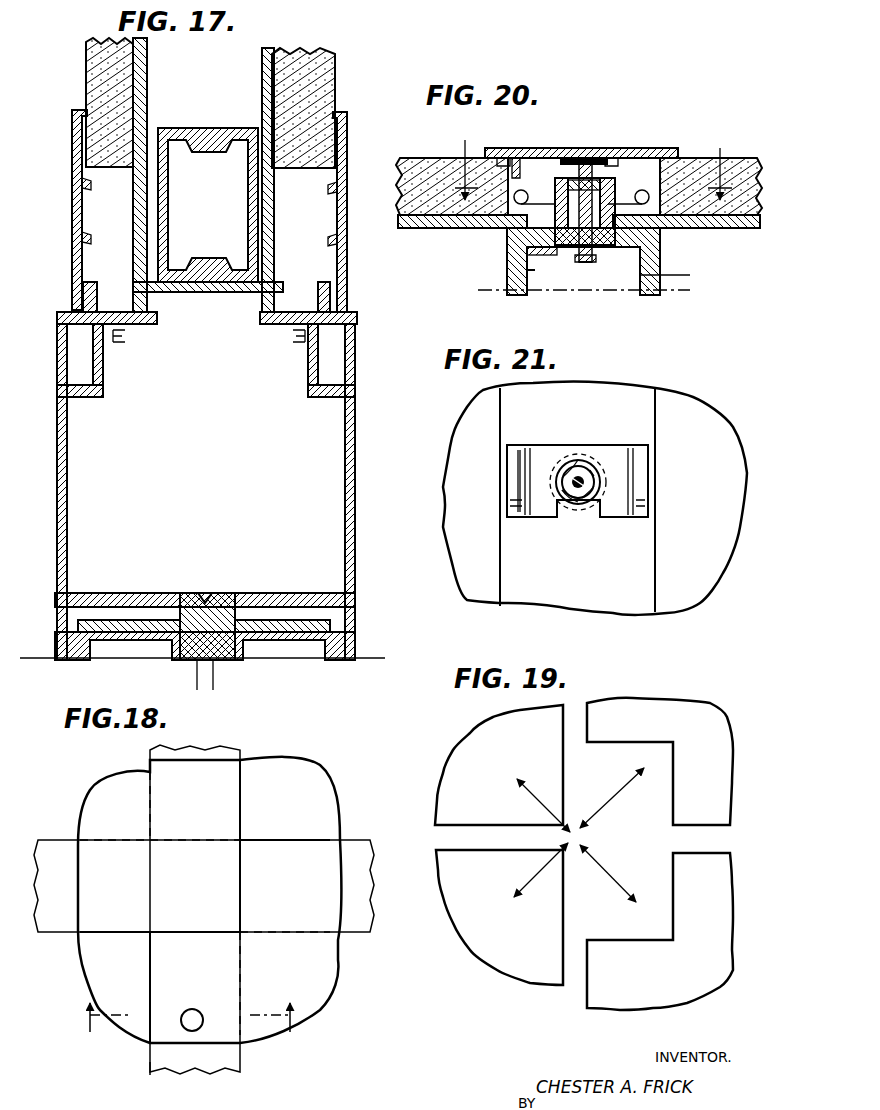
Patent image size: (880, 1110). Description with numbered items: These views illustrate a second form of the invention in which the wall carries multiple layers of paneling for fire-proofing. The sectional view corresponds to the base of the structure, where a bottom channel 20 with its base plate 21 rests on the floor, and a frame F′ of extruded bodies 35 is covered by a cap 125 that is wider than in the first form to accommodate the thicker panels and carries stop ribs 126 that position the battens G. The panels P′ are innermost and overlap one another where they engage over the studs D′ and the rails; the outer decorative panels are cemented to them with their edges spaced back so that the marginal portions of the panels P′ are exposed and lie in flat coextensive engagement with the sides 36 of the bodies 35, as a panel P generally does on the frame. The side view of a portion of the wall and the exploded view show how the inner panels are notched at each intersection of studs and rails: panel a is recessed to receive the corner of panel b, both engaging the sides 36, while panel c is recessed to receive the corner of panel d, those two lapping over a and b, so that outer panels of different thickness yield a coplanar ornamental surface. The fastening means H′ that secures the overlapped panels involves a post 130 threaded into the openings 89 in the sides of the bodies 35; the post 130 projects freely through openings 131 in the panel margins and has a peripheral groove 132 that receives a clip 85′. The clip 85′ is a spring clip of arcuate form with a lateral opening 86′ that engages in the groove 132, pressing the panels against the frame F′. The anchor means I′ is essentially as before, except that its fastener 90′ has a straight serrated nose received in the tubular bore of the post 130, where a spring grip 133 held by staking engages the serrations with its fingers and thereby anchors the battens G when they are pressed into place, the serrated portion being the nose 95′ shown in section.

In FIG. 17, the inner panel P′ is at (258, 97).
In FIG. 20, the inner panel P′ is at (420, 230).
In FIG. 18, the inner panel P′ is at (326, 766).
In FIG. 19, the inner panel P′ is at (514, 966).
In FIG. 21, the panel P is at (560, 586).
In FIG. 17, the batten G is at (70, 183).
In FIG. 20, the batten G is at (680, 148).
In FIG. 17, the extruded body 35 is at (210, 140).
In FIG. 20, the extruded body 35 is at (532, 276).
In FIG. 18, the extruded body 35 is at (152, 1072).
In FIG. 17, the side 36 is at (262, 206).
In FIG. 20, the side 36 is at (505, 228).
In FIG. 18, the side 36 is at (184, 1064).
In FIG. 17, the cap 125 is at (204, 294).
In FIG. 17, the stop rib 126 is at (90, 290).
In FIG. 17, the frame F′ is at (360, 343).
In FIG. 20, the frame F′ is at (662, 276).
In FIG. 20, the base plate 21 is at (586, 166).
In FIG. 20, the clip 85′ is at (516, 185).
In FIG. 21, the clip 85′ is at (521, 448).
In FIG. 20, the post 130 is at (560, 178).
In FIG. 21, the post 130 is at (580, 460).
In FIG. 20, the spring grip 133 is at (578, 170).
In FIG. 20, the anchor means I′ is at (590, 152).
In FIG. 21, the anchor means I′ is at (582, 502).
In FIG. 20, the fastener 90′ is at (604, 156).
In FIG. 21, the fastener 90′ is at (588, 482).
In FIG. 20, the fastening means H′ is at (680, 148).
In FIG. 21, the fastening means H′ is at (606, 444).
In FIG. 20, the opening 131 is at (566, 246).
In FIG. 20, the opening 89 is at (594, 248).
In FIG. 20, the shank 95′ is at (587, 264).
In FIG. 20, the stud D′ is at (512, 272).
In FIG. 20, the peripheral groove 132 is at (625, 206).
In FIG. 21, the peripheral groove 132 is at (565, 504).
In FIG. 21, the lateral opening 86′ is at (597, 503).
In FIG. 18, the bottom channel 20 is at (179, 1027).